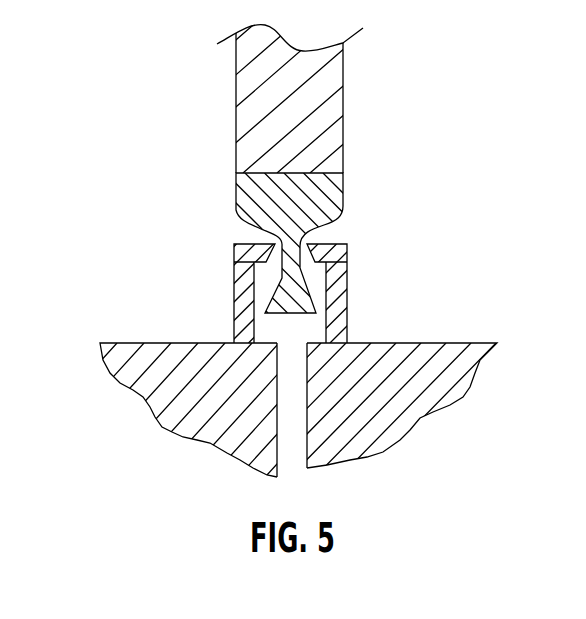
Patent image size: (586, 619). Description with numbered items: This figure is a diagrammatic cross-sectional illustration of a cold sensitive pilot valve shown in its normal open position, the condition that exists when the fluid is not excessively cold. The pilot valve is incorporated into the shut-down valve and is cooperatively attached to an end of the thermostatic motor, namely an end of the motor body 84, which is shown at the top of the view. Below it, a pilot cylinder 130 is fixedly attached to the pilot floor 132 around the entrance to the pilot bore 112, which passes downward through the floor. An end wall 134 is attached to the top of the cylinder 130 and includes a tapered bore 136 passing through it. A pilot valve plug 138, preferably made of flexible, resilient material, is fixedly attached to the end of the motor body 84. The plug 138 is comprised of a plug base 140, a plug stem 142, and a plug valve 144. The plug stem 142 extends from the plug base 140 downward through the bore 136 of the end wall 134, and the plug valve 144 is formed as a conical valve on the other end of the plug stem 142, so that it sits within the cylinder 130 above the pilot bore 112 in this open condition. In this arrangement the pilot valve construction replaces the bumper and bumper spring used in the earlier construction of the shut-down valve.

The motor body 84 is at (320, 78).
The pilot bore 112 is at (295, 388).
The pilot cylinder 130 is at (293, 282).
The pilot floor 132 is at (130, 343).
The end wall 134 is at (238, 251).
The tapered bore 136 is at (316, 262).
The pilot valve plug 138 is at (200, 206).
The plug base 140 is at (313, 191).
The plug stem 142 is at (308, 236).
The plug valve 144 is at (333, 336).